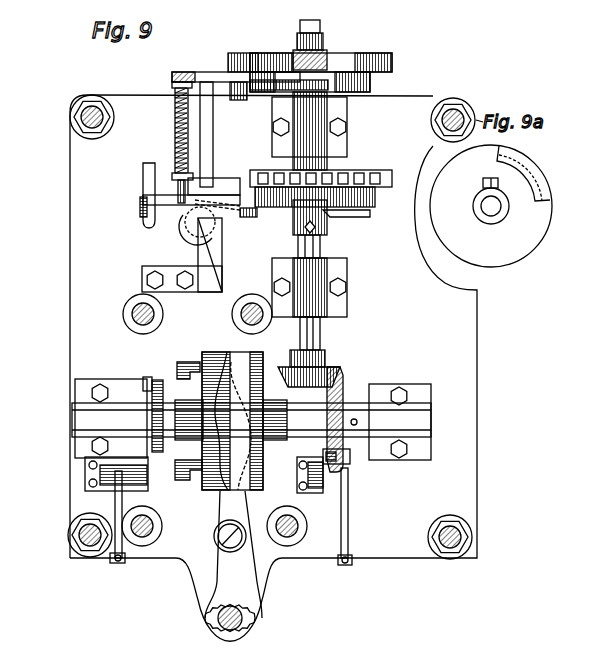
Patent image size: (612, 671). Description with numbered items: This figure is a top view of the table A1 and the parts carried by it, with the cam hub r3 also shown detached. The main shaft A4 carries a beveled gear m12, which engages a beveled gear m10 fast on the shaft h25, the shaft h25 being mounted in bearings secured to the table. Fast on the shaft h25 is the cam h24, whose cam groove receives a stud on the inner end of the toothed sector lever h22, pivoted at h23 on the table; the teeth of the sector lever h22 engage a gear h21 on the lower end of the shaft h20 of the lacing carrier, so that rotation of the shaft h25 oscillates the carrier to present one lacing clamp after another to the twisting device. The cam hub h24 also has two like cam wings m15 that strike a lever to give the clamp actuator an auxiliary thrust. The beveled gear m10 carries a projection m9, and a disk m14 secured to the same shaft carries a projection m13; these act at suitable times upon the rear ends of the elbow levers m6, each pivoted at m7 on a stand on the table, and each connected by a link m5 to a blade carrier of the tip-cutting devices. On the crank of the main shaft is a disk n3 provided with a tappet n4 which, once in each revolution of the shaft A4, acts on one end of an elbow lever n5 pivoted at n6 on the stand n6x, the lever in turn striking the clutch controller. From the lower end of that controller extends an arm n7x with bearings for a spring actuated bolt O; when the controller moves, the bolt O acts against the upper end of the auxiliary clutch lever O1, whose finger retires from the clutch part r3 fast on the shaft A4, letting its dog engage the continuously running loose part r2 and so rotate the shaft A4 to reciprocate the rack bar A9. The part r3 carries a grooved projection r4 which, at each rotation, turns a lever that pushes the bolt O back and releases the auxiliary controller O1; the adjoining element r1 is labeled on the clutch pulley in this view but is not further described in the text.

In FIG. 9, the table A1 is at (362, 560).
In FIG. 9, the main shaft A4 is at (322, 243).
In FIG. 9, the rack bar A9 is at (328, 58).
In FIG. 9, the disk n3 is at (372, 80).
In FIG. 9, the tappet n4 is at (286, 80).
In FIG. 9, the elbow lever n5 is at (222, 72).
In FIG. 9, the pivot n6 is at (241, 53).
In FIG. 9, the stand n6x is at (205, 92).
In FIG. 9, the arm n7x is at (172, 138).
In FIG. 9, the spring actuated bolt O is at (187, 190).
In FIG. 9, the auxiliary clutch lever O1 is at (222, 196).
In FIG. 9, the ratchet wheel r1 is at (386, 178).
In FIG. 9, the loose clutch pulley part r2 is at (358, 170).
In FIG. 9, the clutch part r3 is at (375, 198).
In FIG. 9A, the clutch part r3 is at (489, 268).
In FIG. 9, the projection r4 is at (370, 214).
In FIG. 9A, the projection r4 is at (522, 168).
In FIG. 9, the beveled gear m10 is at (345, 403).
In FIG. 9, the beveled gear m12 is at (341, 372).
In FIG. 9, the projection m13 is at (148, 385).
In FIG. 9, the disk m14 is at (87, 462).
In FIG. 9, the cam wings m15 is at (190, 362).
In FIG. 9, the link m5 is at (110, 560).
In FIG. 9, the elbow lever m6 is at (115, 506).
In FIG. 9, the pivot m7 is at (90, 482).
In FIG. 9, the projection m9 is at (338, 462).
In FIG. 9, the shaft h20 is at (218, 620).
In FIG. 9, the gear h21 is at (256, 614).
In FIG. 9, the toothed sector lever h22 is at (222, 585).
In FIG. 9, the pivot h23 is at (214, 536).
In FIG. 9, the cam h24 is at (258, 485).
In FIG. 9, the shaft h25 is at (300, 428).